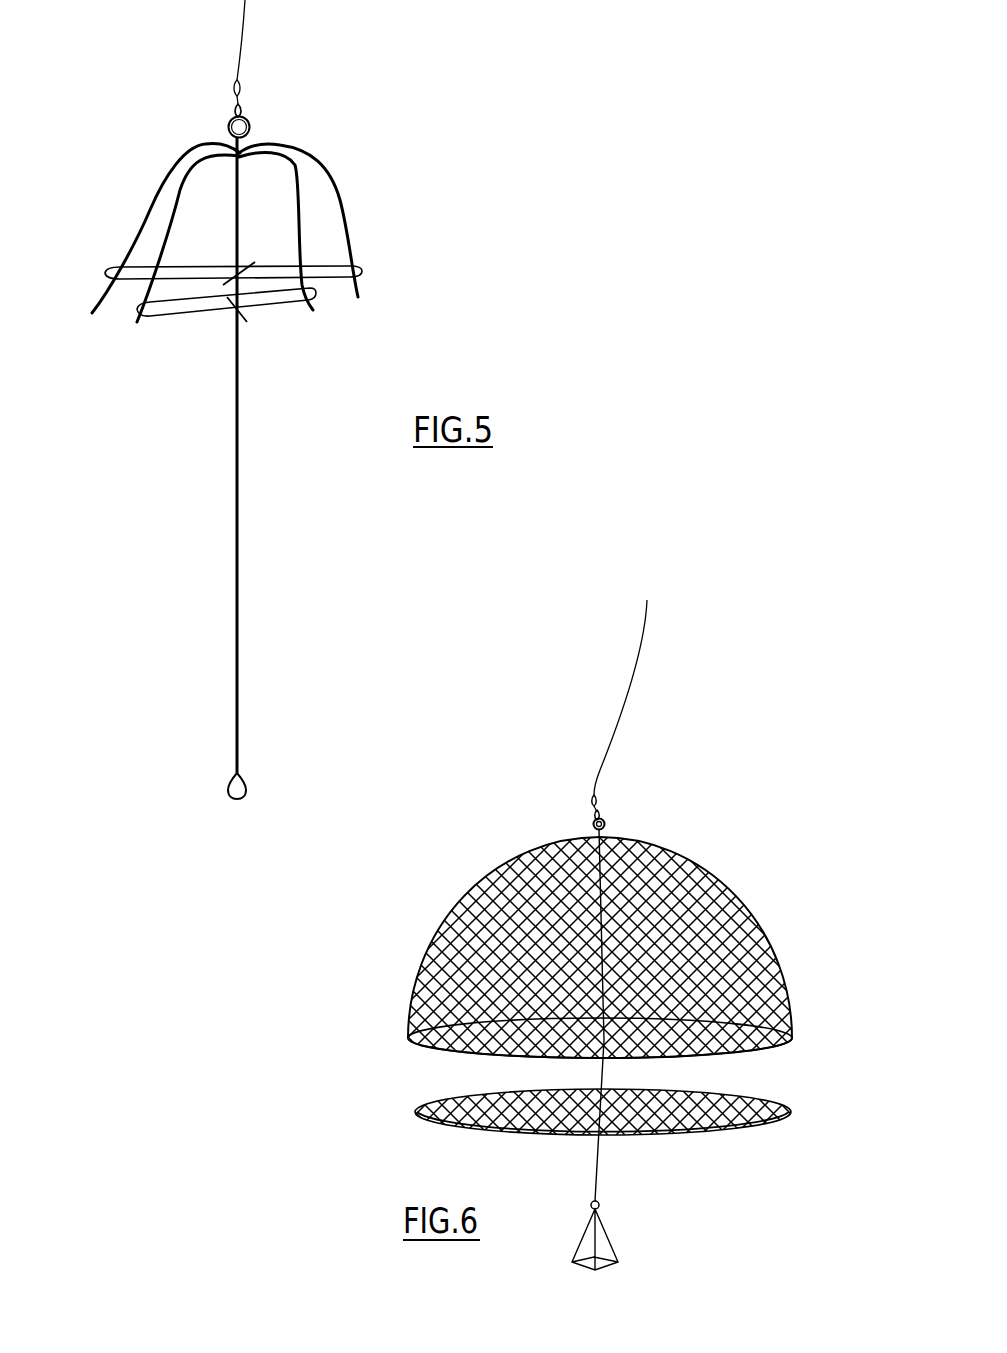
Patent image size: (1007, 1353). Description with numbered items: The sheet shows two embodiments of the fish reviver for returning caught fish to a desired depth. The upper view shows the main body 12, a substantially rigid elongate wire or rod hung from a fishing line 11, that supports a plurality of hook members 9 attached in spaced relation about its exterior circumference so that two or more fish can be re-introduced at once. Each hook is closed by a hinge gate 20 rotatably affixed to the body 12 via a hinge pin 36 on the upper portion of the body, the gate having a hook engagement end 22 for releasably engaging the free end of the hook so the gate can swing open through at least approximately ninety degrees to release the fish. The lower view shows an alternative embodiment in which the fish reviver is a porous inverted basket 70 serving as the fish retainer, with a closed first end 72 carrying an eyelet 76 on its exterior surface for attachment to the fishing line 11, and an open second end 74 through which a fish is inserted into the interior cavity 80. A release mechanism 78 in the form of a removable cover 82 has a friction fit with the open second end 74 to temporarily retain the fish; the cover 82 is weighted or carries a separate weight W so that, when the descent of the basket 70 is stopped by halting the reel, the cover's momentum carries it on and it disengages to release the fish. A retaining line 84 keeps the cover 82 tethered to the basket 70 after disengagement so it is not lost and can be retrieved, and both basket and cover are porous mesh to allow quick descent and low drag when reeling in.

In FIG. 5, the hook members 9 is at (301, 193).
In FIG. 5, the fishing line 11 is at (245, 18).
In FIG. 6, the fishing line 11 is at (604, 740).
In FIG. 5, the main body 12 is at (237, 415).
In FIG. 5, the hinge gate 20 is at (277, 312).
In FIG. 5, the hook engagement end 22 is at (362, 270).
In FIG. 5, the hinge pin 36 is at (233, 303).
In FIG. 6, the inverted basket 70 is at (636, 1000).
In FIG. 6, the closed first end 72 is at (693, 839).
In FIG. 6, the open second end 74 is at (826, 1040).
In FIG. 6, the eyelet 76 is at (606, 820).
In FIG. 6, the release mechanism 78 is at (826, 1110).
In FIG. 6, the interior cavity 80 is at (636, 1117).
In FIG. 6, the removable cover 82 is at (765, 1125).
In FIG. 6, the retaining line 84 is at (605, 1068).
In FIG. 6, the weight W is at (605, 1248).